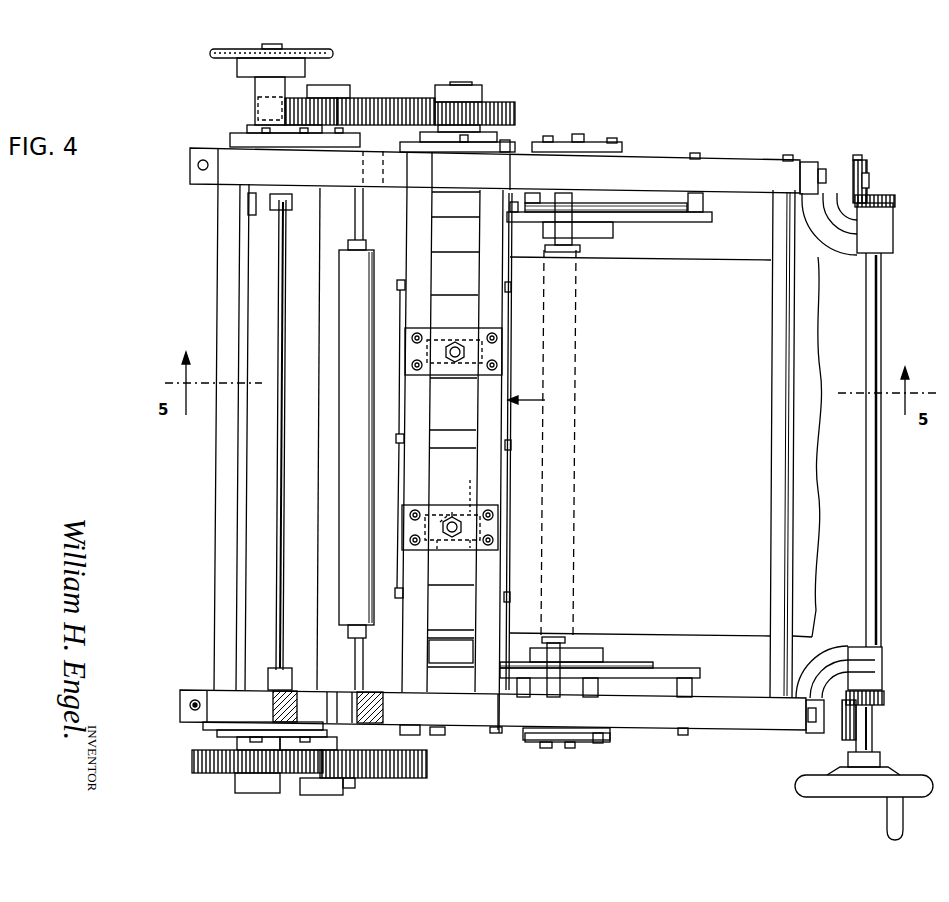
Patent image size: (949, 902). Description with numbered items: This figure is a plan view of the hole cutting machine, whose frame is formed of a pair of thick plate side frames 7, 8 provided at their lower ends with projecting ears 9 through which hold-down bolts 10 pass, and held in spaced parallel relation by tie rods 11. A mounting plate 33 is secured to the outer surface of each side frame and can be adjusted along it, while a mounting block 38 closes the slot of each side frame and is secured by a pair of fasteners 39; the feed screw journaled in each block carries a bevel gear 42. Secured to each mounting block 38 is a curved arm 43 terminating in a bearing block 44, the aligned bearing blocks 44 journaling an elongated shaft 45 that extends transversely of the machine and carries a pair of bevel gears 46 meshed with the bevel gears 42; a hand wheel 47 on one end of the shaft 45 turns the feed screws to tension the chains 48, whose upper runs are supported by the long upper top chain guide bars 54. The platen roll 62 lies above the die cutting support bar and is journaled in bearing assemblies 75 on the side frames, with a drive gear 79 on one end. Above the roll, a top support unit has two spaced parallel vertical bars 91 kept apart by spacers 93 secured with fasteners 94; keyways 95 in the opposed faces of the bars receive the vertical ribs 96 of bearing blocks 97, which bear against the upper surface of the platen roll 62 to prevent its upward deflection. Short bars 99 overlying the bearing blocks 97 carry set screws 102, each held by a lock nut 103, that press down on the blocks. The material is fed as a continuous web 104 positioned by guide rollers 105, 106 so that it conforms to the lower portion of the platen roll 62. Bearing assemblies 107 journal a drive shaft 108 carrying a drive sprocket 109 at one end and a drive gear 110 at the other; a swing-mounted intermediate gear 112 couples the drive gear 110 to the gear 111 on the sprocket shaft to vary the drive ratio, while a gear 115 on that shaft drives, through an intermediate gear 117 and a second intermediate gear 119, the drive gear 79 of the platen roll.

The side frame 7 is at (720, 735).
The side frame 8 is at (735, 160).
The projecting ear 9 is at (190, 165).
The hold-down bolt 10 is at (203, 172).
The tie rod 11 is at (216, 510).
The mounting plate 33 is at (596, 143).
The mounting block 38 is at (810, 163).
The fastener 39 is at (824, 172).
The bevel gear 42 is at (862, 165).
The curved arm 43 is at (845, 240).
The bearing block 44 is at (893, 230).
The shaft 45 is at (872, 528).
The bevel gear 46 is at (893, 200).
The hand wheel 47 is at (825, 795).
The chain 48 is at (625, 662).
The upper top chain guide bar 54 is at (700, 222).
The platen roll 62 is at (542, 442).
The bearing assembly 75 is at (500, 142).
The drive gear 79 is at (506, 102).
The bar 91 is at (405, 410).
The spacer 93 is at (470, 205).
The fastener 94 is at (400, 284).
The keyway 95 is at (410, 520).
The vertical rib 96 is at (490, 510).
The bearing block 97 is at (462, 491).
The short bar 99 is at (497, 355).
The set screw 102 is at (454, 345).
The lock nut 103 is at (450, 514).
The web 104 is at (728, 636).
The guide roller 105 is at (572, 252).
The guide roller 106 is at (340, 308).
The bearing assembly 107 is at (250, 137).
The drive shaft 108 is at (281, 530).
The drive sprocket 109 is at (223, 58).
The drive gear 110 is at (192, 758).
The gear 111 is at (425, 770).
The intermediate gear 112 is at (378, 778).
The gear 115 is at (258, 112).
The intermediate gear 117 is at (322, 100).
The second intermediate gear 119 is at (398, 97).